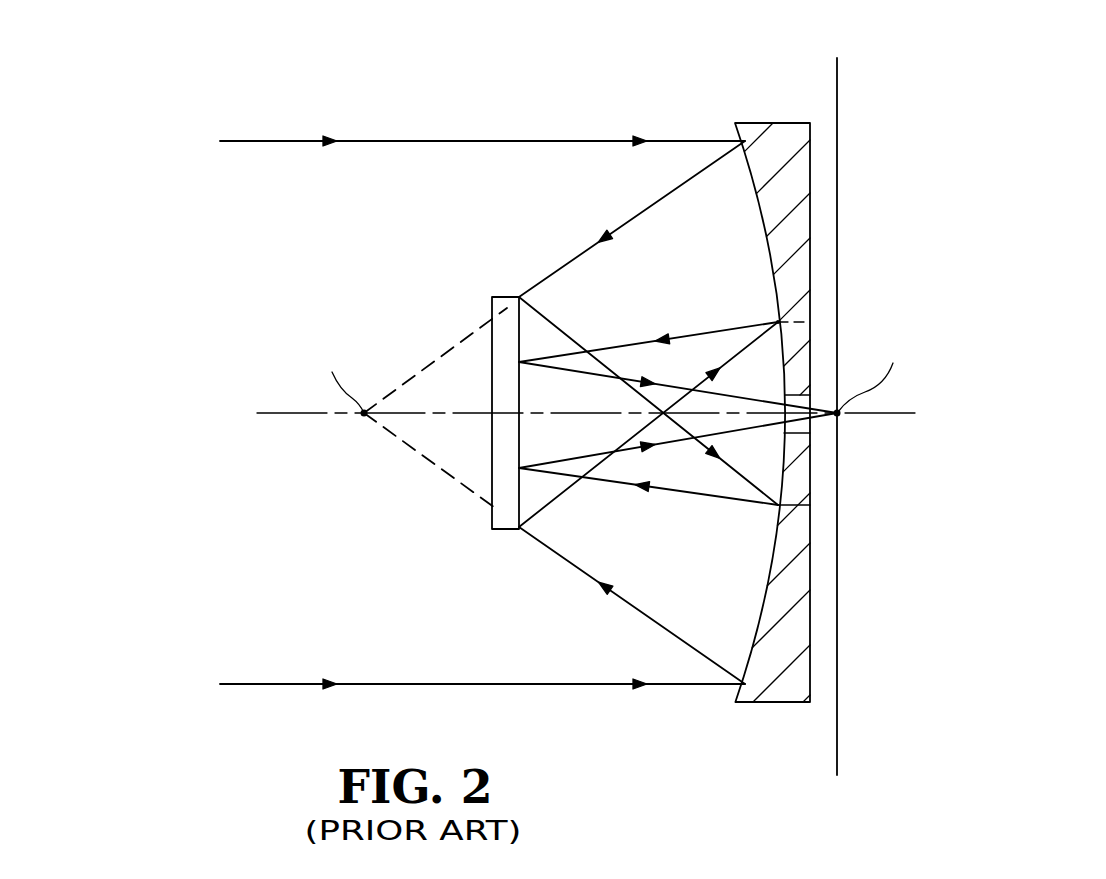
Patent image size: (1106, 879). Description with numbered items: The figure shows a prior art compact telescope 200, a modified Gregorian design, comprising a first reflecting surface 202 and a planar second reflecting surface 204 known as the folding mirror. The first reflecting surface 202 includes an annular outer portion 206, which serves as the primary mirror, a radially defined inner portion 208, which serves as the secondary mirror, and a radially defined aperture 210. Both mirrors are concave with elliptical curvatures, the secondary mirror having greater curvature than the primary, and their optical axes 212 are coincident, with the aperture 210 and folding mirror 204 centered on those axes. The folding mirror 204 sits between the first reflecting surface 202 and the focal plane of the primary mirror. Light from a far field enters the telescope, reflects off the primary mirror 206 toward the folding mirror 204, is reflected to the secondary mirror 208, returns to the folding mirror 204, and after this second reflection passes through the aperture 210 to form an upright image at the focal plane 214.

The compact telescope 200 is at (396, 92).
The first reflecting surface 202 is at (750, 655).
The second reflecting surface 204 is at (520, 496).
The annular outer portion 206 is at (768, 585).
The inner portion 208 is at (770, 330).
The aperture 210 is at (800, 433).
The optical axes 212 is at (338, 409).
The focal plane 214 is at (840, 145).